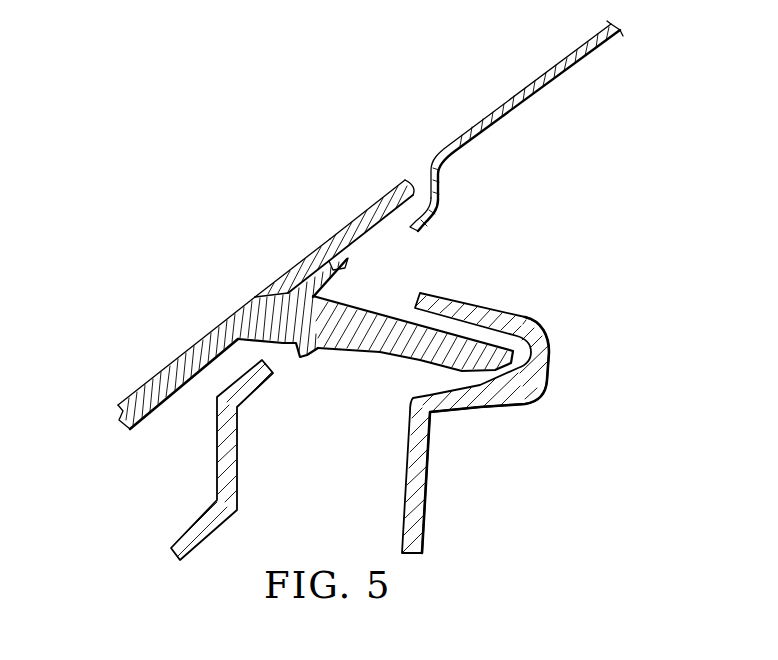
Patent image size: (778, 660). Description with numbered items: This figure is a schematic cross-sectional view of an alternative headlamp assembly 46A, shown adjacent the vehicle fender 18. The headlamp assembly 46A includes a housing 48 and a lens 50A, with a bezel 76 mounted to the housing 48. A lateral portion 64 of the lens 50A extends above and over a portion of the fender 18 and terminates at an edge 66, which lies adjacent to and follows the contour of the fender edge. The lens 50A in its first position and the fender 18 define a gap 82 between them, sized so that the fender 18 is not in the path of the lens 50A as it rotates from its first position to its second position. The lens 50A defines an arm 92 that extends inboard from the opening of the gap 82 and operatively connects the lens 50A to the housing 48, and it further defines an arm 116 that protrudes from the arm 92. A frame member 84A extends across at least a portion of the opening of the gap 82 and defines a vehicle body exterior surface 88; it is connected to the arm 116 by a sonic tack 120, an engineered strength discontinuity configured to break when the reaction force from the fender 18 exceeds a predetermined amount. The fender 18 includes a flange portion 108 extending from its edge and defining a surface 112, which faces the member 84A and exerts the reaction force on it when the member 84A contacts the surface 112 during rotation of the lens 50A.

The fender 18 is at (523, 93).
The headlamp assembly 46A is at (116, 277).
The housing 48 is at (550, 349).
The lens 50A is at (142, 388).
The lateral portion 64 is at (183, 350).
The edge 66 is at (253, 296).
The bezel 76 is at (238, 455).
The gap 82 is at (474, 258).
The frame member 84A is at (362, 212).
The vehicle body exterior surface 88 is at (305, 257).
The arm 92 is at (387, 353).
The portion of the fender 108 is at (441, 203).
The surface 112 is at (407, 178).
The arm 116 is at (347, 267).
The sonic tack 120 is at (336, 281).